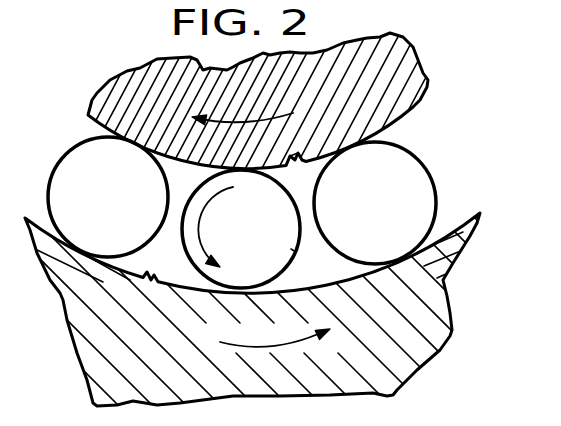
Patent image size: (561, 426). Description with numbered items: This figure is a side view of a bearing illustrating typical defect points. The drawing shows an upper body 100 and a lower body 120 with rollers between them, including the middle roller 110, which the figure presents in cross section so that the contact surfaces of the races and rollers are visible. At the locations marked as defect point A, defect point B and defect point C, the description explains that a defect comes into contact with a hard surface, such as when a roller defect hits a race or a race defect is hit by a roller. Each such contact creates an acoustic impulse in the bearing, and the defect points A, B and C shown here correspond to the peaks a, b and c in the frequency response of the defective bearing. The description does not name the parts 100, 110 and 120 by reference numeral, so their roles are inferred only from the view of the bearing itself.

The upper roll / upper body 100 is at (368, 87).
The intermediate roller 110 is at (262, 236).
The lower roll / lower body 120 is at (394, 322).
The defect point a A is at (292, 250).
The defect point b B is at (298, 153).
The defect point c C is at (150, 274).